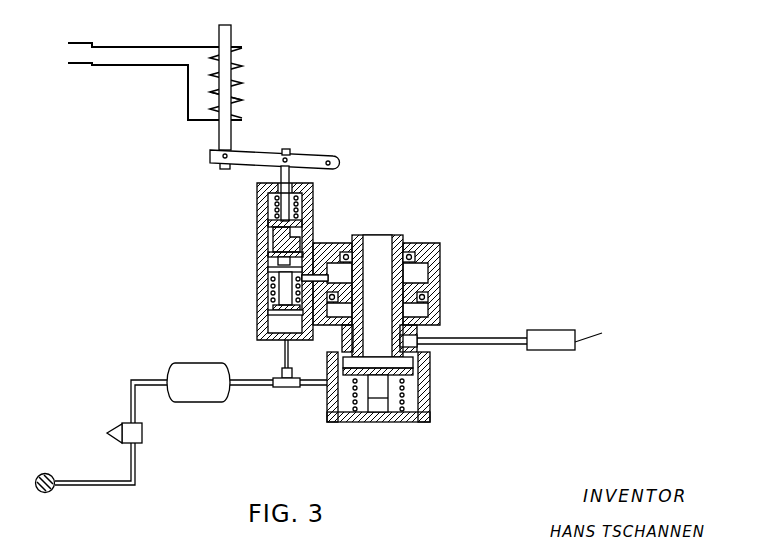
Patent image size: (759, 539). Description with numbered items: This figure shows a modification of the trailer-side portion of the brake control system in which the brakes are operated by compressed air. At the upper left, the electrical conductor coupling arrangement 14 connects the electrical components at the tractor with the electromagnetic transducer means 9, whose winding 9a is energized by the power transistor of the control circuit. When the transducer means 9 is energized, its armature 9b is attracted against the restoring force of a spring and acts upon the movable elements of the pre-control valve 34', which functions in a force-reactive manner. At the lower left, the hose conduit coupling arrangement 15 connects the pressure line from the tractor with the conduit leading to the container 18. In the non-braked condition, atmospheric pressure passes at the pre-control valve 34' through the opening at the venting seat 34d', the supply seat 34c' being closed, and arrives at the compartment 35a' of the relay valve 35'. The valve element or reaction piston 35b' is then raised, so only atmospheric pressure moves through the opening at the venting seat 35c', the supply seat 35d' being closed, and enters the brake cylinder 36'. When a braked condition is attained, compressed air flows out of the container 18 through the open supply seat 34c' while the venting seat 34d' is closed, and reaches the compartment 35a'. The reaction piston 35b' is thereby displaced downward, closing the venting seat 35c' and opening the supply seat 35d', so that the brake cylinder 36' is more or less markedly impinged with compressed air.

The electromagnetic transducer means 9 is at (245, 63).
The winding 9a is at (240, 93).
The armature 9b is at (228, 128).
The electrical conductor coupling arrangement 14 is at (78, 66).
The hose conduit coupling arrangement 15 is at (47, 473).
The negative pressure container 18 is at (193, 393).
The pre-control valve 34' is at (256, 261).
The supply seat 34c' is at (251, 293).
The venting seat 34d' is at (251, 242).
The relay valve 35' is at (405, 287).
The compartment 35a' is at (429, 262).
The reaction piston 35b' is at (424, 291).
The venting seat 35c' is at (428, 384).
The supply seat 35d' is at (420, 387).
The brake cylinder 36' is at (556, 320).